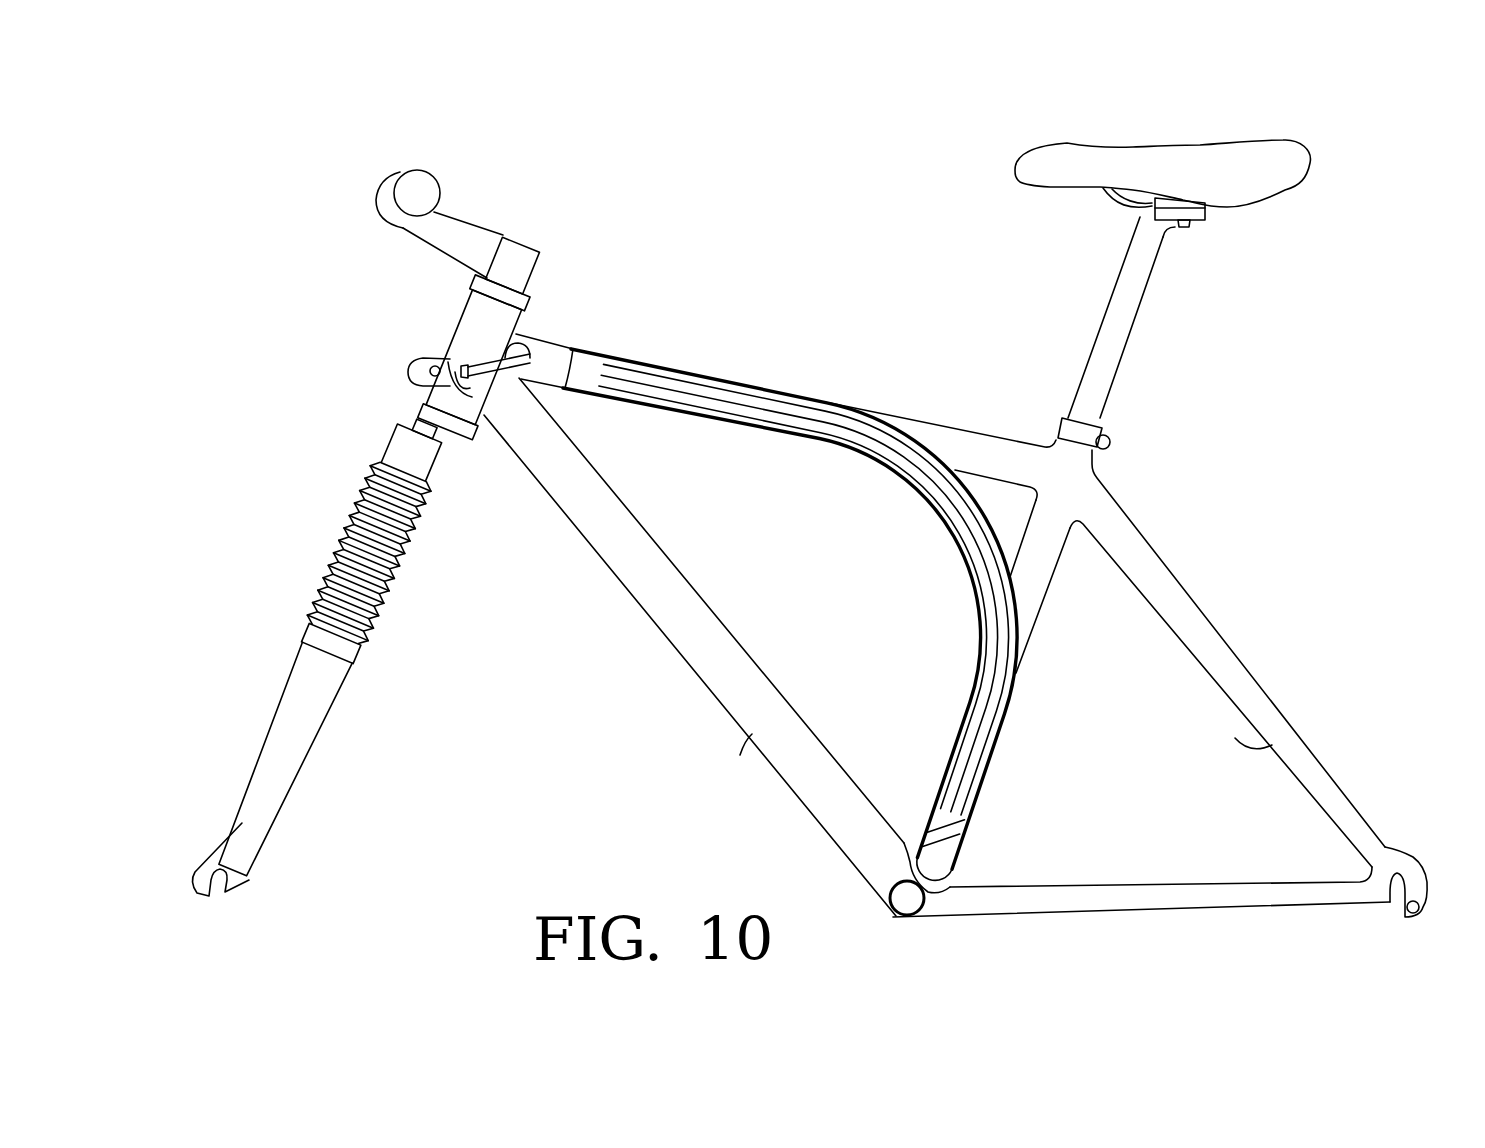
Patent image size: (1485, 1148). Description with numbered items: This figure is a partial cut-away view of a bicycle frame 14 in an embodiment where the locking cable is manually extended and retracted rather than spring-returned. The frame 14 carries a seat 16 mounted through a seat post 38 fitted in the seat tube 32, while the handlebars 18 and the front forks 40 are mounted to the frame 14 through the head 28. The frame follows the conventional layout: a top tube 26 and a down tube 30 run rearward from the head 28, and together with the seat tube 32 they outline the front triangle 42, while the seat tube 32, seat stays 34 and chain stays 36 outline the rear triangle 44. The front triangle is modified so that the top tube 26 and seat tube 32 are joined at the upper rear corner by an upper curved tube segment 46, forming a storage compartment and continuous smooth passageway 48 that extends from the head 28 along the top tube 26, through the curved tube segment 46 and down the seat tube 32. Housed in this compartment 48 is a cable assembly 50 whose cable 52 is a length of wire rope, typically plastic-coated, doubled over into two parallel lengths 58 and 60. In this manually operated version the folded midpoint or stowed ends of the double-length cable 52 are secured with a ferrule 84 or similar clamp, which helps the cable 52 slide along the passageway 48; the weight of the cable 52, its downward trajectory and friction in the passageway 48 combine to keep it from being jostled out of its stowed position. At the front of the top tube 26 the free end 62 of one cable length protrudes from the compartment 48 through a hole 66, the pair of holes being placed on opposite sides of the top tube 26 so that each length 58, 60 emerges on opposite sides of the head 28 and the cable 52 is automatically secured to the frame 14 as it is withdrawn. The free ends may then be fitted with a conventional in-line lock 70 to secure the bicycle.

The frame 14 is at (556, 564).
The seat 16 is at (1073, 150).
The handlebars 18 is at (405, 215).
The top tube 26 is at (1003, 443).
The head 28 is at (475, 316).
The down tube 30 is at (708, 688).
The seat tube 32 is at (1040, 603).
The seat stays 34 is at (1232, 660).
The chain stays 36 is at (1128, 888).
The seat post 38 is at (1140, 302).
The front forks 40 is at (290, 704).
The front triangle 42 is at (801, 676).
The rear triangle 44 is at (1275, 730).
The upper curved tube segment 46 is at (790, 602).
The storage compartment and continuous smooth passageway 48 is at (724, 416).
The cable assembly 50 is at (404, 393).
The cable 52 is at (814, 405).
The first length of cable 58 is at (665, 398).
The second length of cable 60 is at (688, 377).
The free end of cable 62 is at (498, 366).
The hole 66 is at (526, 342).
The in-line lock 70 is at (478, 387).
The ferrule 84 is at (945, 860).